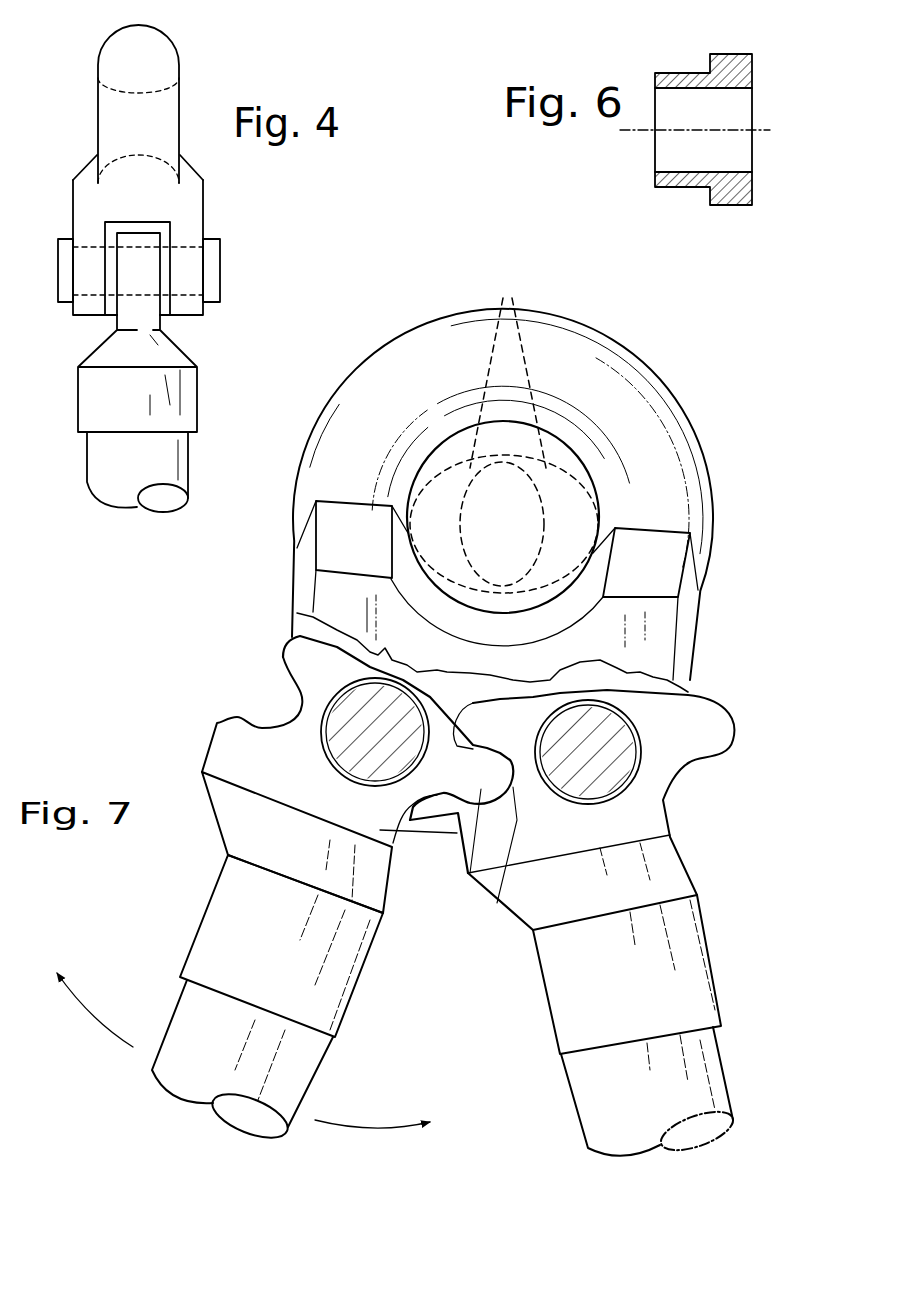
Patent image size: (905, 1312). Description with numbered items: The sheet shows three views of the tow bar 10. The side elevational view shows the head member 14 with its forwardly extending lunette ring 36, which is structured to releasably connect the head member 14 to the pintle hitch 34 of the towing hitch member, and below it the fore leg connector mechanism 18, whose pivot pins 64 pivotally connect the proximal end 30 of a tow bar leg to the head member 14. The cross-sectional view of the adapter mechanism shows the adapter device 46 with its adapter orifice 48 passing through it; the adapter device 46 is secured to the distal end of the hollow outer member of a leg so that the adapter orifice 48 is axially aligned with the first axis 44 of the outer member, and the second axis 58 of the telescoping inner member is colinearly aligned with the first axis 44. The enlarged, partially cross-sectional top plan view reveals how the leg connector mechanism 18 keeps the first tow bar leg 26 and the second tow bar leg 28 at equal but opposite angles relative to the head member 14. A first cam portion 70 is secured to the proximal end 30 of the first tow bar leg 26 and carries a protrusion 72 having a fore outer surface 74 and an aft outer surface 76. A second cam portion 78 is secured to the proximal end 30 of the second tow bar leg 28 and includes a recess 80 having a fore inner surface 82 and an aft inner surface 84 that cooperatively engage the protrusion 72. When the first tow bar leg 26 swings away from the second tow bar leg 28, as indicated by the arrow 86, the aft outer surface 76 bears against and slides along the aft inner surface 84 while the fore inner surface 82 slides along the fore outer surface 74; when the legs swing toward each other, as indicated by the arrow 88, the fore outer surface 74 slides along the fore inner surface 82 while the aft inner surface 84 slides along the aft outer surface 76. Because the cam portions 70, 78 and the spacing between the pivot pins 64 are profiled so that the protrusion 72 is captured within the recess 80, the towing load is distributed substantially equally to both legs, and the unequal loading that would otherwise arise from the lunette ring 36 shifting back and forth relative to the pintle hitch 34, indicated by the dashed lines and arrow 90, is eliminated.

In FIG. 4, the tow bar 10 is at (250, 80).
In FIG. 6, the tow bar 10 is at (636, 78).
In FIG. 7, the tow bar 10 is at (750, 351).
In FIG. 4, the head member 14 is at (202, 193).
In FIG. 7, the head member 14 is at (670, 613).
In FIG. 4, the fore leg connector mechanism 18 is at (244, 233).
In FIG. 7, the fore leg connector mechanism 18 is at (752, 738).
In FIG. 7, the first tow bar leg 26 is at (300, 1065).
In FIG. 7, the second tow bar leg 28 is at (700, 1060).
In FIG. 4, the proximal end 30 is at (187, 470).
In FIG. 7, the proximal end 30 is at (183, 1012).
In FIG. 7, the pintle hitch 34 is at (504, 434).
In FIG. 4, the lunette ring 36 is at (132, 52).
In FIG. 7, the lunette ring 36 is at (603, 368).
In FIG. 6, the first axis 44 is at (645, 132).
In FIG. 6, the adapter device 46 is at (732, 57).
In FIG. 6, the adapter orifice 48 is at (728, 172).
In FIG. 6, the second axis 58 is at (664, 130).
In FIG. 4, the pivot pins 64 is at (58, 283).
In FIG. 7, the pivot pins 64 is at (345, 725).
In FIG. 7, the first cam portion 70 is at (215, 755).
In FIG. 7, the protrusion 72 is at (443, 781).
In FIG. 7, the fore outer surface 74 is at (462, 805).
In FIG. 7, the aft outer surface 76 is at (444, 835).
In FIG. 7, the second cam portion 78 is at (670, 863).
In FIG. 7, the recess 80 is at (498, 893).
In FIG. 7, the fore inner surface 82 is at (451, 718).
In FIG. 7, the aft inner surface 84 is at (470, 877).
In FIG. 7, the arrow 86 is at (90, 1013).
In FIG. 7, the arrow 88 is at (378, 1125).
In FIG. 7, the dashed lines and arrow 90 is at (528, 530).